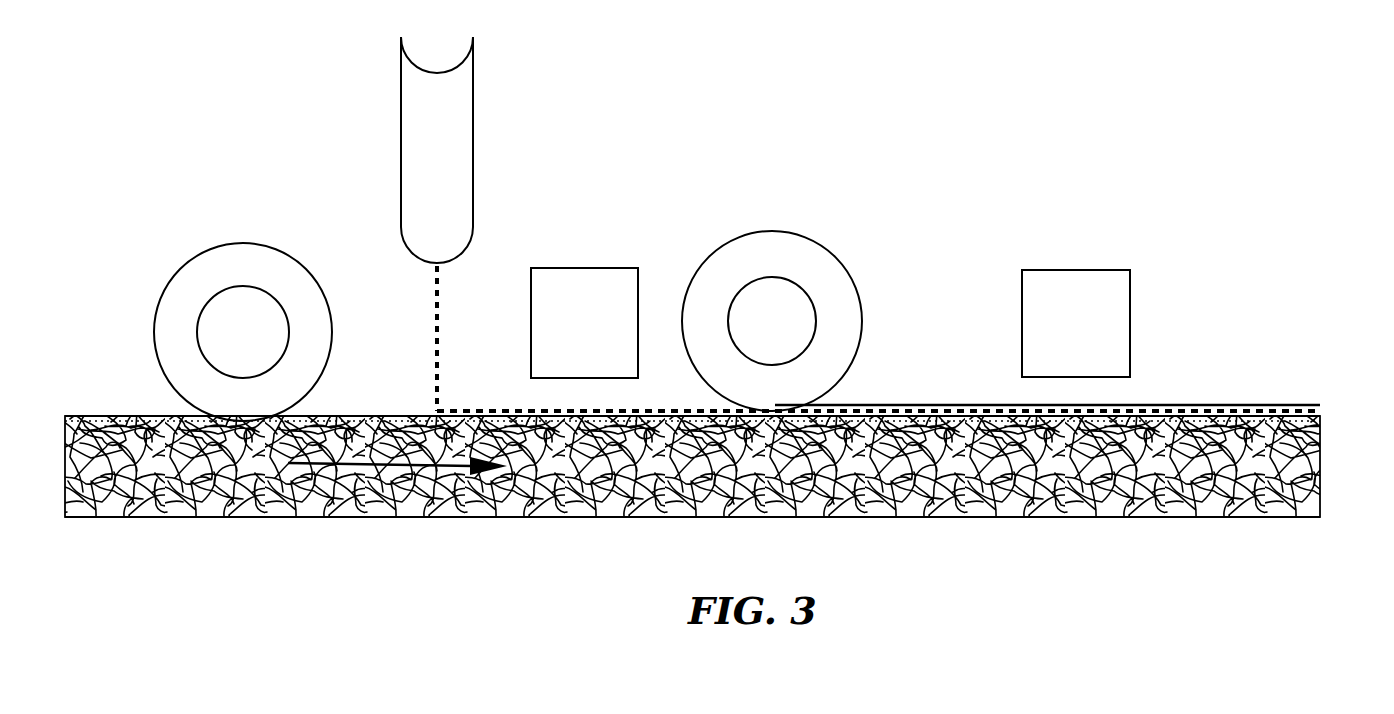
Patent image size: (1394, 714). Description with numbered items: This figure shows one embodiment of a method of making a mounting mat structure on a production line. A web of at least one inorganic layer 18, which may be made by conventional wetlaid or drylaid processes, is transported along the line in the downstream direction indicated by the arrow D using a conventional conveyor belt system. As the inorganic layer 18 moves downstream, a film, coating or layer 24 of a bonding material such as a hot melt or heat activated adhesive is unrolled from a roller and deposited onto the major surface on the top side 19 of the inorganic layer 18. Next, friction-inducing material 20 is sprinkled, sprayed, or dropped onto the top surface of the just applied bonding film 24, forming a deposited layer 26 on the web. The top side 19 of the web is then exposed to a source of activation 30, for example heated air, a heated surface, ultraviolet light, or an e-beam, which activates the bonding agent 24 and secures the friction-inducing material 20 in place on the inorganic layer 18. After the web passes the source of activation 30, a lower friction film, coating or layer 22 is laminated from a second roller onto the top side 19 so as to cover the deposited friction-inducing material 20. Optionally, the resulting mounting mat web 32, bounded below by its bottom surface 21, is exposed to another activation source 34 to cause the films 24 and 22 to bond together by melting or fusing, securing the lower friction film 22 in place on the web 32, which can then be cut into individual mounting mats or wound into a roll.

The inorganic layer 18 is at (1322, 460).
The top side 19 is at (126, 420).
The friction-inducing material 20 is at (435, 338).
The second surface of web 21 is at (1067, 517).
The lower friction film 22 is at (777, 230).
The bonding film 24 is at (226, 242).
The applied coating layer 26 is at (928, 405).
The source of activation 30 is at (583, 268).
The mounting mat web 32 is at (1268, 404).
The activation source 34 is at (1078, 270).
The downstream direction D is at (357, 470).